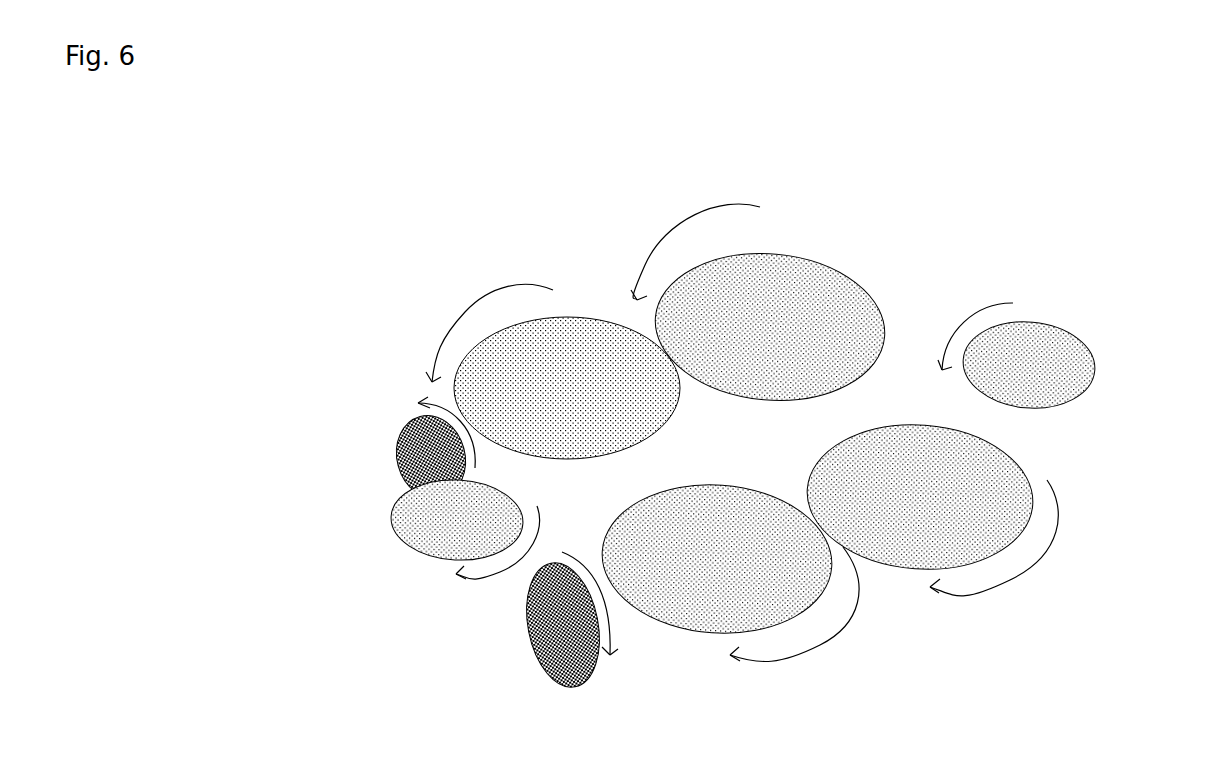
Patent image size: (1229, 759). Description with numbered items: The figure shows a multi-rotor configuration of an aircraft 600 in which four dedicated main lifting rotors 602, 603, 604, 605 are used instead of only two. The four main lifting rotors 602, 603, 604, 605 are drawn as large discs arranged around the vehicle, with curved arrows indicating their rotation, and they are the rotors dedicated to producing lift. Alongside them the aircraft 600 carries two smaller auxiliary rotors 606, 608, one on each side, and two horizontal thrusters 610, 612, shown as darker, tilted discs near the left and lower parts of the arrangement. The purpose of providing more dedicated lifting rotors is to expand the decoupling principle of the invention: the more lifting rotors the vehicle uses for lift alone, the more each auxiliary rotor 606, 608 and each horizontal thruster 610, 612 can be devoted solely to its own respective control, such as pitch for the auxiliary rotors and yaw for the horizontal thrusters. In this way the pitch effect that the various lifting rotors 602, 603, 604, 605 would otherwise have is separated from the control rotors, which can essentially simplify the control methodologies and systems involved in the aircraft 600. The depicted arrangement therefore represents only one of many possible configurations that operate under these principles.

The aircraft 600 is at (360, 240).
The main lifting rotor 602 is at (520, 393).
The main lifting rotor 603 is at (807, 315).
The main lifting rotor 604 is at (716, 585).
The main lifting rotor 605 is at (988, 505).
The auxiliary rotor 606 is at (435, 505).
The auxiliary rotor 608 is at (1050, 357).
The horizontal thruster 610 is at (434, 440).
The horizontal thruster 612 is at (545, 612).